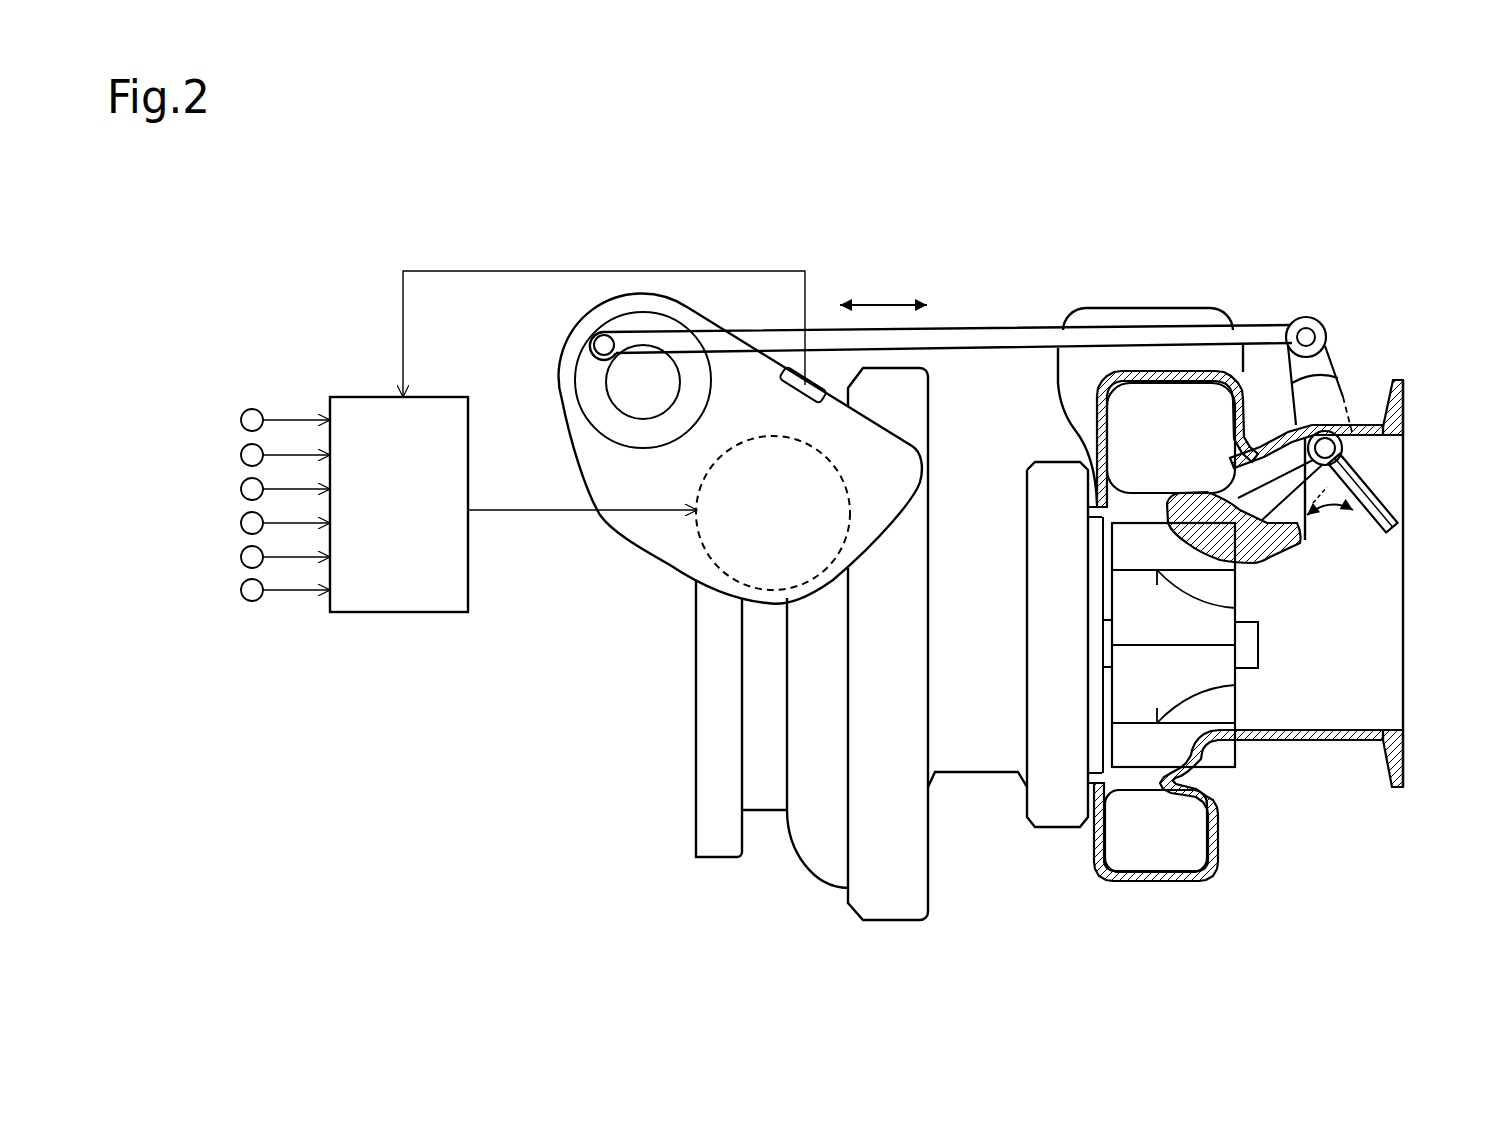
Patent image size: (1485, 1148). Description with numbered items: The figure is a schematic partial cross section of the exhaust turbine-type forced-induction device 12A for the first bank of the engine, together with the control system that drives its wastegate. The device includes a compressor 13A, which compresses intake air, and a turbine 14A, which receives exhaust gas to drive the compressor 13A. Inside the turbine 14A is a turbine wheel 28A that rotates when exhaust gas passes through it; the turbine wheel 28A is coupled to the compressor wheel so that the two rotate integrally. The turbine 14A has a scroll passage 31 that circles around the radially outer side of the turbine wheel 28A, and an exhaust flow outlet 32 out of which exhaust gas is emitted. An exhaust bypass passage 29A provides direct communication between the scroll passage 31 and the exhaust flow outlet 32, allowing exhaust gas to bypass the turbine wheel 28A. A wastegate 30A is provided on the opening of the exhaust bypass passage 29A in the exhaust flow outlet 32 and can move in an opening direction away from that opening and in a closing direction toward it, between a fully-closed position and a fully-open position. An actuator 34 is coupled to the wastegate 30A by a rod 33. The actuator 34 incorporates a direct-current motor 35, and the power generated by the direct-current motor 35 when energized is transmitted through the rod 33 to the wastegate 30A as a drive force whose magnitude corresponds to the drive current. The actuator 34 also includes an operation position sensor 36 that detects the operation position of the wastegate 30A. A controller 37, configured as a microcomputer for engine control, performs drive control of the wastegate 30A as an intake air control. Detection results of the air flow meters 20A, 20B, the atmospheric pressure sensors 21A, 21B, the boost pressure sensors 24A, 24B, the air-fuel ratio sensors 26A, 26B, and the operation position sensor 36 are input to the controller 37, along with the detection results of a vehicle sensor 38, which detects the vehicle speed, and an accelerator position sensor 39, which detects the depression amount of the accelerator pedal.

The exhaust turbine-type forced-induction device 12A is at (1329, 294).
The compressor 13A is at (825, 867).
The turbine 14A is at (1209, 626).
The air flow meter 20A is at (216, 422).
The air flow meter 20B is at (241, 420).
The atmospheric pressure sensor 21A is at (216, 457).
The atmospheric pressure sensor 21B is at (241, 455).
The boost pressure sensor 24A is at (216, 491).
The boost pressure sensor 24B is at (241, 489).
The air-fuel ratio sensor 26A is at (216, 525).
The air-fuel ratio sensor 26B is at (241, 523).
The turbine wheel 28A is at (1225, 697).
The exhaust bypass passage 29A is at (1247, 483).
The wastegate 30A is at (1380, 513).
The scroll passage 31 is at (1123, 435).
The exhaust flow outlet 32 is at (1367, 597).
The rod 33 is at (992, 331).
The actuator 34 is at (580, 463).
The direct-current motor 35 is at (700, 490).
The operation position sensor 36 is at (793, 377).
The controller 37 is at (402, 614).
The vehicle sensor 38 is at (241, 557).
The accelerator position sensor 39 is at (241, 590).